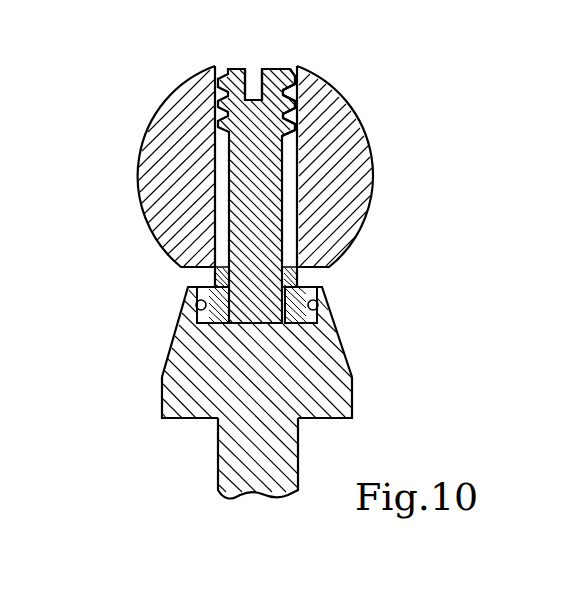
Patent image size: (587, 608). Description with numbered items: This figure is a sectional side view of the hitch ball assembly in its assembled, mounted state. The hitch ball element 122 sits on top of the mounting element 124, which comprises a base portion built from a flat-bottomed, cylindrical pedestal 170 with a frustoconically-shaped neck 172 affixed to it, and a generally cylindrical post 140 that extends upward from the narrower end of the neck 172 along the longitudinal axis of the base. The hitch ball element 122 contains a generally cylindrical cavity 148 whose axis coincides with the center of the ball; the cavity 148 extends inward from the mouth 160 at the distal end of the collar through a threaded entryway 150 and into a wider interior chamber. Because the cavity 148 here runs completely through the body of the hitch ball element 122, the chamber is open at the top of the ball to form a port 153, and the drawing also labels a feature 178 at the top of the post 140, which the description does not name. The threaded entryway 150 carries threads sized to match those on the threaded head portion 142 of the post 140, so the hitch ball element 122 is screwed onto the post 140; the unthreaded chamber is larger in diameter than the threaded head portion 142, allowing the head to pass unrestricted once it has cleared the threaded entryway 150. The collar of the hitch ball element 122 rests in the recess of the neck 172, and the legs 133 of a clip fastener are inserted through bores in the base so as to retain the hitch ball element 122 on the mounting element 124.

The hitch ball element 122 is at (352, 153).
The mounting element 124 is at (257, 393).
The legs 133 is at (194, 300).
The post 140 is at (240, 167).
The threaded head portion 142 is at (292, 99).
The cavity 148 is at (302, 221).
The threaded entryway 150 is at (305, 283).
The port 153 is at (295, 58).
The mouth 160 is at (322, 340).
The pedestal 170 is at (160, 395).
The neck 172 is at (175, 335).
The slot 178 is at (246, 60).